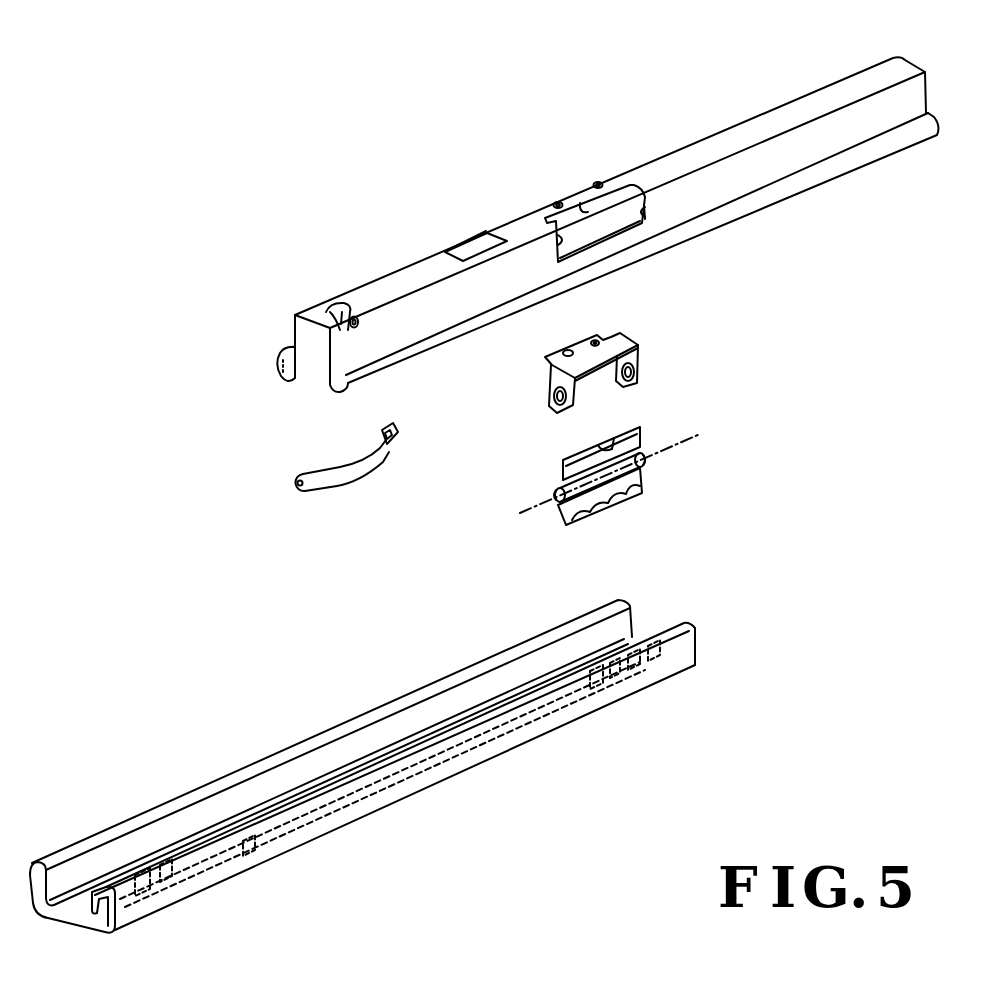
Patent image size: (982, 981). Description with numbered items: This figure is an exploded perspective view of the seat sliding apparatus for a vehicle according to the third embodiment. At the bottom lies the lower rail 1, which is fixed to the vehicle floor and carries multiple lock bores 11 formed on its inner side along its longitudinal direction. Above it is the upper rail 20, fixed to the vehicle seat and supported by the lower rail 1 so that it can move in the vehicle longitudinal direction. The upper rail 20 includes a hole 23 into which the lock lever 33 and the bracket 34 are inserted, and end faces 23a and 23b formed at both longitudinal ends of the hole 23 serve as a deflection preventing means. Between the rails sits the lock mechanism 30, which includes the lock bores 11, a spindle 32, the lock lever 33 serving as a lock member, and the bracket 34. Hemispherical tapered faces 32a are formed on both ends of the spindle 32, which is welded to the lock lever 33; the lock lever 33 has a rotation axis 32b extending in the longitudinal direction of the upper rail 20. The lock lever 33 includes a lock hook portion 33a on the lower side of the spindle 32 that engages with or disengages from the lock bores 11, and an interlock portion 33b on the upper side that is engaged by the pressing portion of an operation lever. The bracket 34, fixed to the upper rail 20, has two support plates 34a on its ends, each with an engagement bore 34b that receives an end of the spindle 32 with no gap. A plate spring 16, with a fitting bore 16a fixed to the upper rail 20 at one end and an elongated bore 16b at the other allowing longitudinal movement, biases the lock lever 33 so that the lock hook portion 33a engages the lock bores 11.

The lower rail 1 is at (697, 650).
The lock bores 11 is at (645, 635).
The plate spring 16 is at (347, 473).
The fitting bore 16a is at (300, 495).
The elongated bore 16b is at (397, 445).
The upper rail 20 is at (908, 62).
The hole 23 is at (588, 210).
The end face 23a is at (554, 242).
The end face 23b is at (644, 212).
The lock mechanism 30 is at (801, 342).
The spindle 32 is at (633, 482).
The hemispherical tapered faces 32a is at (645, 458).
The rotation axis 32b is at (690, 442).
The lock lever 33 is at (546, 468).
The lock hook portion 33a is at (620, 512).
The interlock portion 33b is at (613, 444).
The bracket 34 is at (627, 317).
The support plates 34a is at (548, 364).
The engagement bores 34b is at (640, 377).